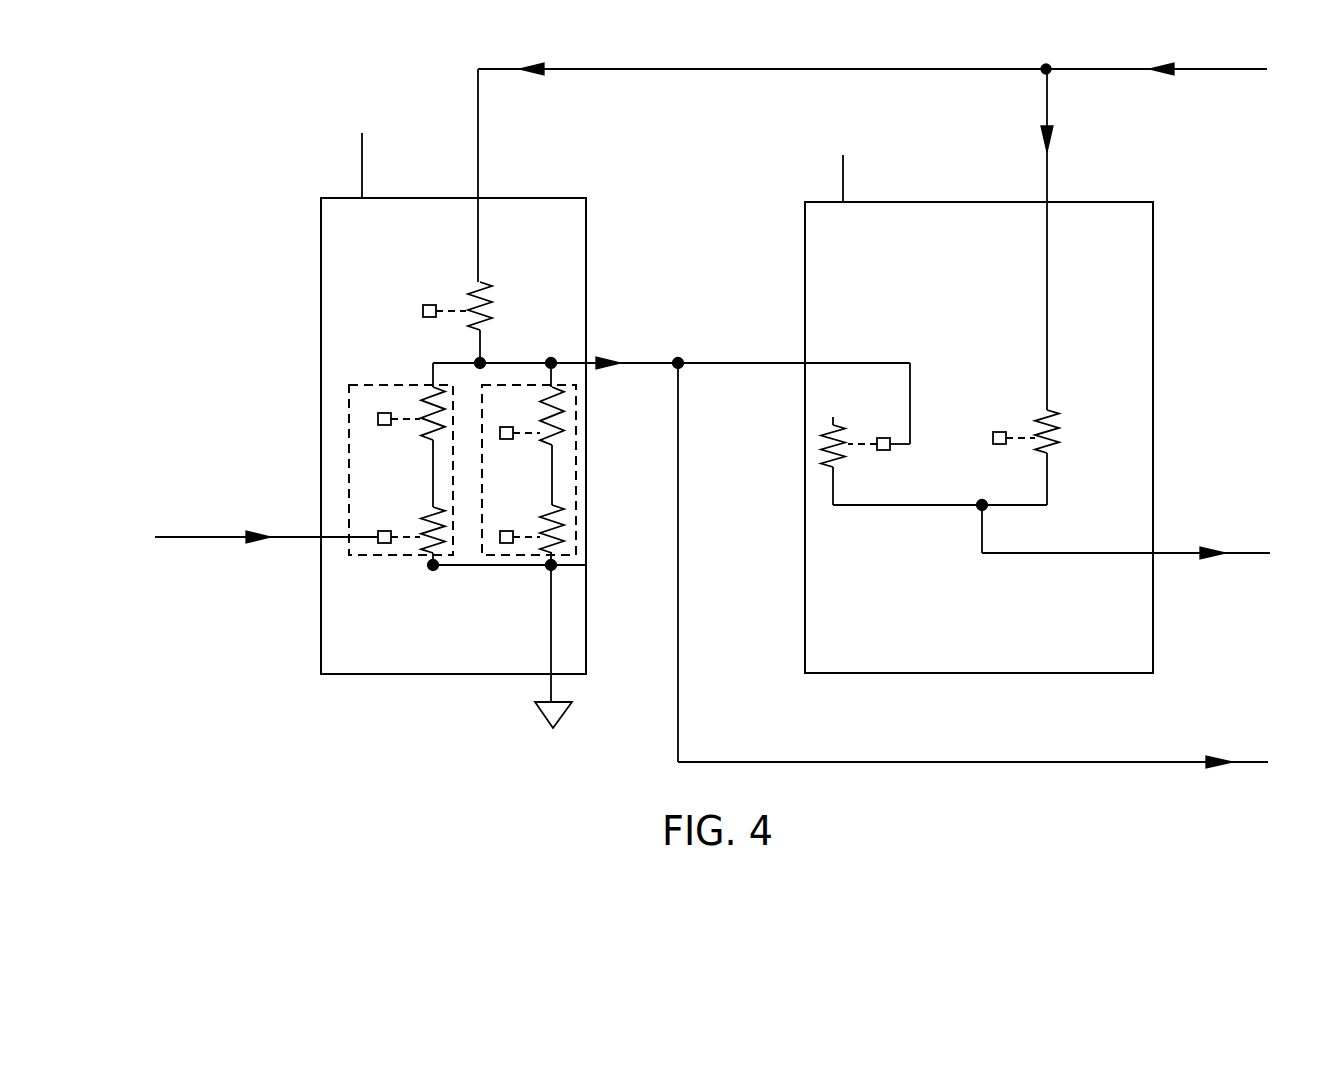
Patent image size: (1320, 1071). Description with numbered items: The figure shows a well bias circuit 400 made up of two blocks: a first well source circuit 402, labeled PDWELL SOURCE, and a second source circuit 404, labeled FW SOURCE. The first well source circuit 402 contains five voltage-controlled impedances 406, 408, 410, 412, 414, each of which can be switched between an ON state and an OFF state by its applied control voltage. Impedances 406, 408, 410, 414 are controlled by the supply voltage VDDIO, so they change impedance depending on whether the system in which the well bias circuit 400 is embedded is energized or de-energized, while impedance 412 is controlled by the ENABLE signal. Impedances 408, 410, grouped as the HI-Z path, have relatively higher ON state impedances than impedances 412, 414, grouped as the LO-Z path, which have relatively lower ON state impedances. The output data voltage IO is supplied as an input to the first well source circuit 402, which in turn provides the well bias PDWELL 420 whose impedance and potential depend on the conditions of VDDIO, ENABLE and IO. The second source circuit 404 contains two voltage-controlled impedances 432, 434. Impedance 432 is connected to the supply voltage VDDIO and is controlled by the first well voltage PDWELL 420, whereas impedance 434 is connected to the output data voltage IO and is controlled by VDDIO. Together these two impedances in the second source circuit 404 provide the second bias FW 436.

The well bias circuit 400 is at (293, 780).
The first well source circuit 402 is at (322, 245).
The second source circuit 404 is at (1155, 232).
The voltage-controlled impedance 406 is at (480, 297).
The voltage-controlled impedance 408 is at (561, 432).
The voltage-controlled impedance 410 is at (561, 536).
The voltage-controlled impedance 412 is at (425, 545).
The voltage-controlled impedance 414 is at (428, 388).
The well bias PDWELL 420 is at (678, 455).
The voltage-controlled impedance 432 is at (838, 460).
The voltage-controlled impedance 434 is at (1053, 455).
The second bias FW 436 is at (1193, 557).